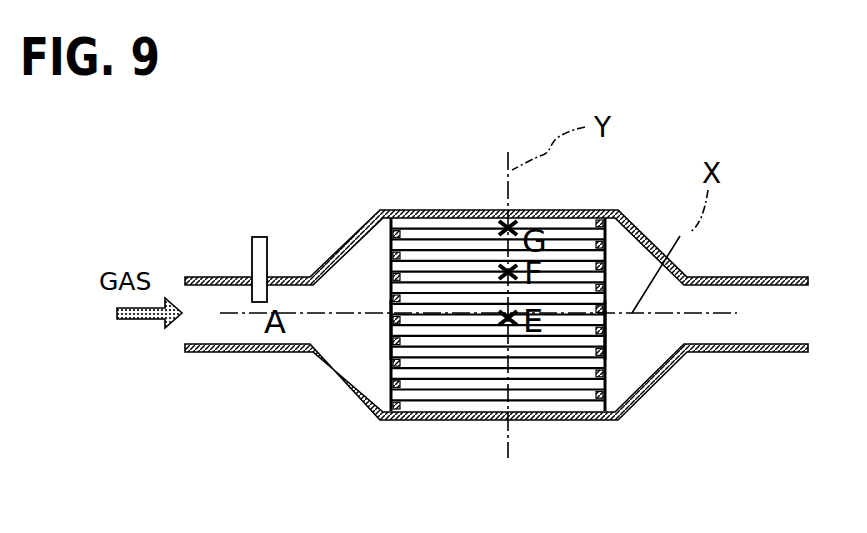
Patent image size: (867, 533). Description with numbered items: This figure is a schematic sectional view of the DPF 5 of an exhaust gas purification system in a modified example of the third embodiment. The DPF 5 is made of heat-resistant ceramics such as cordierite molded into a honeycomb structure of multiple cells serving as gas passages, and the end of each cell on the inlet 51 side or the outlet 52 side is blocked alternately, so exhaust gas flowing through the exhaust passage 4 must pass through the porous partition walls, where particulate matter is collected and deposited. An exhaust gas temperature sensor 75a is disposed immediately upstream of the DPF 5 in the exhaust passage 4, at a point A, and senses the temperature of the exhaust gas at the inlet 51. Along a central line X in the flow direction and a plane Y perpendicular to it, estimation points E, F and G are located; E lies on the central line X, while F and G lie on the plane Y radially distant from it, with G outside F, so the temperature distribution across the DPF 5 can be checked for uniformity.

The exhaust passage 4 is at (272, 372).
The DPF 5 is at (437, 382).
The inlet 51 is at (390, 328).
The outlet 52 is at (605, 340).
The exhaust gas temperature sensor 75a is at (253, 265).